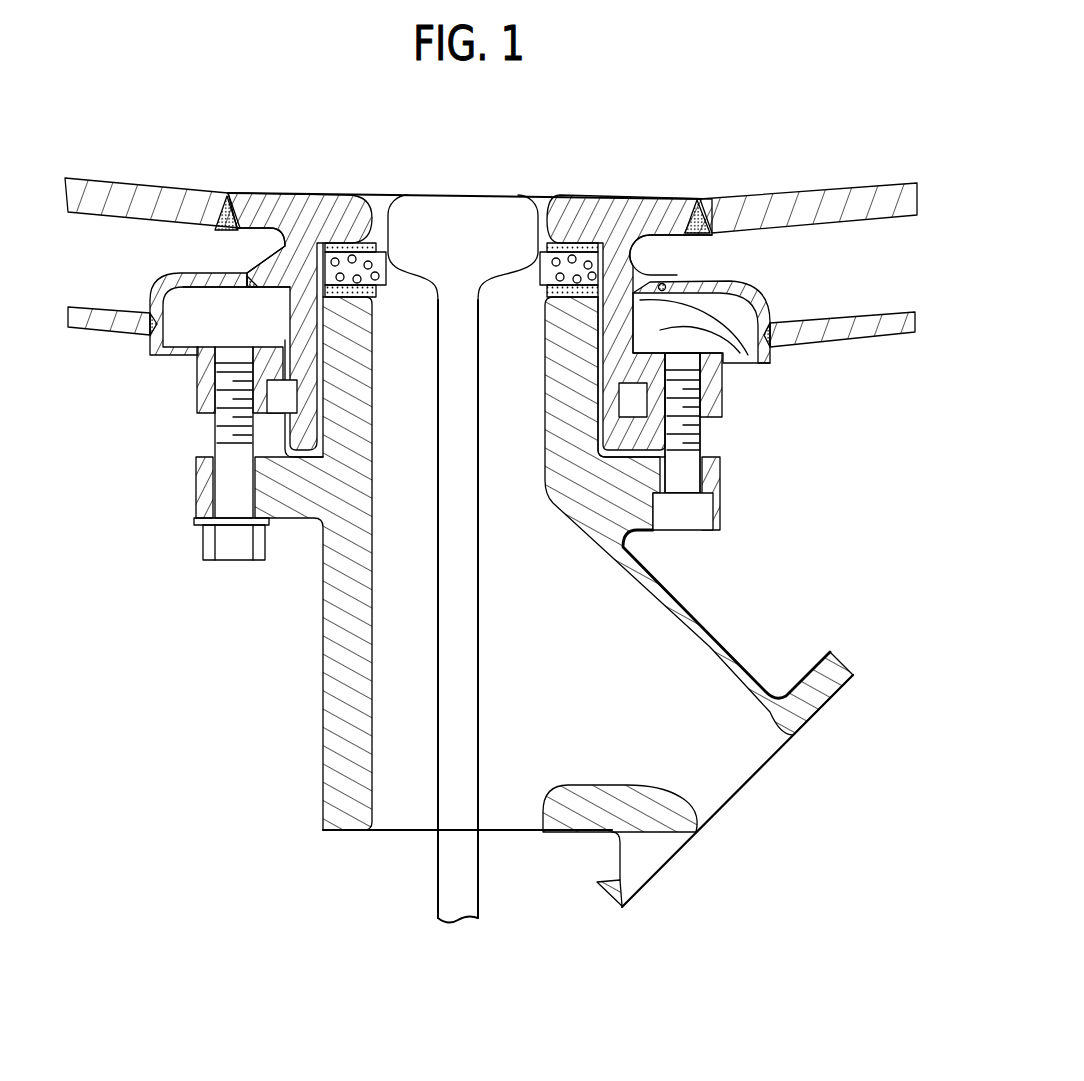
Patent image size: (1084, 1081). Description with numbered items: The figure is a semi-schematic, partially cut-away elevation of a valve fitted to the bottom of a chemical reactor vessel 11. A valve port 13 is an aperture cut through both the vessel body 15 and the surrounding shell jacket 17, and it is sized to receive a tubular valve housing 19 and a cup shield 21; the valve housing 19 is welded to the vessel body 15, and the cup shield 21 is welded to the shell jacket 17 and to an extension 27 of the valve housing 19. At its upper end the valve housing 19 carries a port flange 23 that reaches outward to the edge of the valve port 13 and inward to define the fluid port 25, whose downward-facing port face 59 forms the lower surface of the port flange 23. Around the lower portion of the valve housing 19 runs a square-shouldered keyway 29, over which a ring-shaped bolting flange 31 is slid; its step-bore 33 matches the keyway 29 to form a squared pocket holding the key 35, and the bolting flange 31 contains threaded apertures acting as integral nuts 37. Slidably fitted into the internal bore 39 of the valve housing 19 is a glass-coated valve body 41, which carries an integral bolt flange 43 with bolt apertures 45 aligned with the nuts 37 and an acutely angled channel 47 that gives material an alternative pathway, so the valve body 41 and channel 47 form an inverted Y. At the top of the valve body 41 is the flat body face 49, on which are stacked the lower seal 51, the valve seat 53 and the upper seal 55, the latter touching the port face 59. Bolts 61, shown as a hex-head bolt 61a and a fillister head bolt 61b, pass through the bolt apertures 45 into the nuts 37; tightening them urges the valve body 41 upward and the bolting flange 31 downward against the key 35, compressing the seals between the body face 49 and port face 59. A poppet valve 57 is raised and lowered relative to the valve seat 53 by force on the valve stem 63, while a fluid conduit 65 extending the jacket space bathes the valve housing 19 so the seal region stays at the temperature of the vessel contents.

The vessel 11 is at (772, 160).
The valve port 13 is at (696, 200).
The vessel body 15 is at (138, 178).
The shell jacket 17 is at (98, 328).
The valve housing 19 is at (282, 247).
The cup shield 21 is at (182, 360).
The port flange 23 is at (287, 193).
The fluid port 25 is at (390, 195).
The extension 27 is at (725, 365).
The keyway 29 is at (627, 400).
The bolting flange 31 is at (198, 392).
The step-bore 33 is at (282, 398).
The key 35 is at (683, 428).
The nuts 37 is at (724, 403).
The internal bore 39 is at (373, 380).
The valve body 41 is at (525, 575).
The bolt flange 43 is at (197, 490).
The bolt apertures 45 is at (222, 498).
The channel 47 is at (728, 655).
The body face 49 is at (608, 205).
The lower seal 51 is at (574, 197).
The valve seat 53 is at (418, 268).
The upper seal 55 is at (554, 197).
The poppet valve 57 is at (503, 197).
The port face 59 is at (352, 277).
The bolts 61 is at (213, 440).
The hex-head bolt 61a is at (202, 540).
The fillister head bolt 61b is at (706, 530).
The valve stem 63 is at (437, 872).
The fluid conduit 65 is at (697, 257).